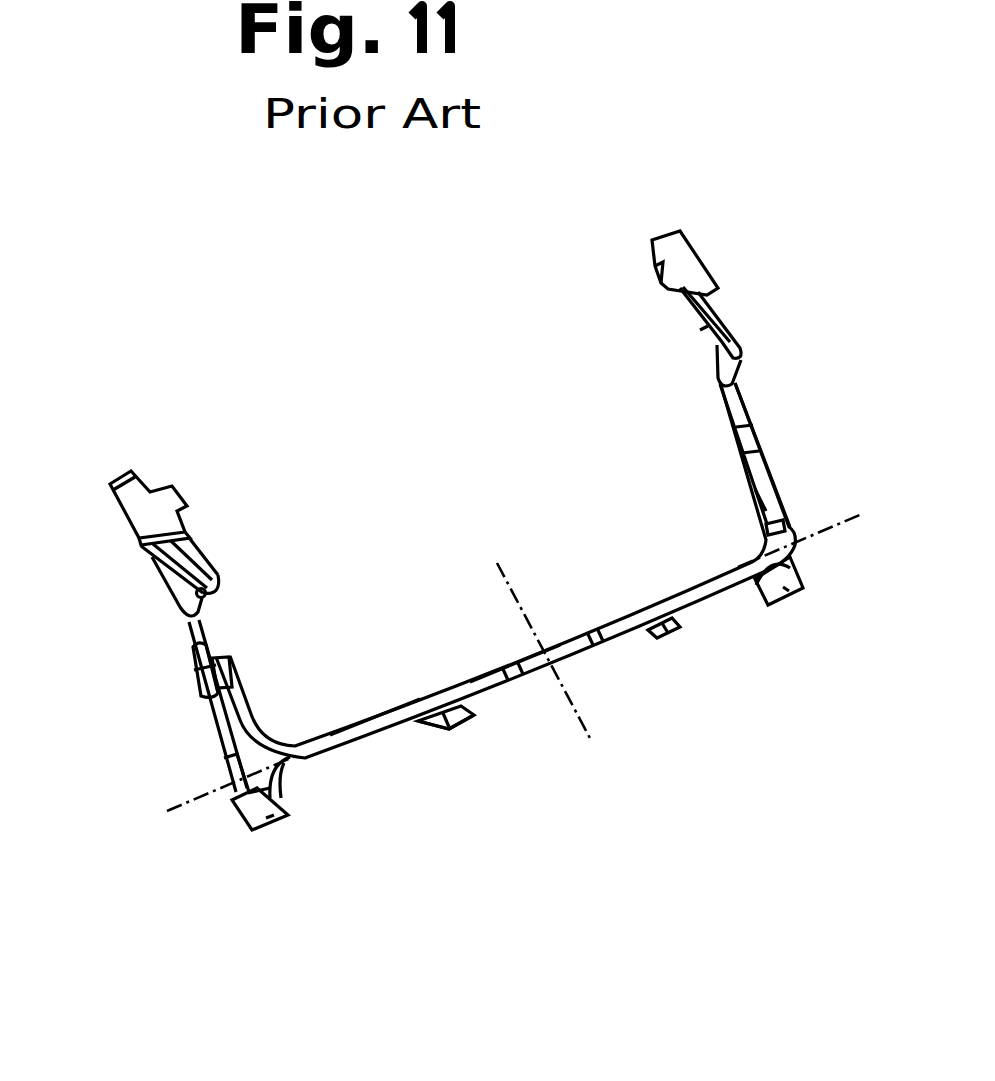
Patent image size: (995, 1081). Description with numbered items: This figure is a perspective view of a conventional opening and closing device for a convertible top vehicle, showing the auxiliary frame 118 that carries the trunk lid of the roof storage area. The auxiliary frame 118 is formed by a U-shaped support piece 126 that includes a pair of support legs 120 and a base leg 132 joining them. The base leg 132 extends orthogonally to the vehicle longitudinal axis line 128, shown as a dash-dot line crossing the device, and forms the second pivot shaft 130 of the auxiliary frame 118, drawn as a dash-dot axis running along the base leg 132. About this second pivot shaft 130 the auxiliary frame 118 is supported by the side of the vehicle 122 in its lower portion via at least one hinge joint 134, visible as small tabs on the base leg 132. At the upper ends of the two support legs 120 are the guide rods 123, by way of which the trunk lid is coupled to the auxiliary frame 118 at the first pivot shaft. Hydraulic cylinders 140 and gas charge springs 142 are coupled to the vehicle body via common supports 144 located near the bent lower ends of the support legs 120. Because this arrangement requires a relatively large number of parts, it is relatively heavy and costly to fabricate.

The auxiliary frame 118 is at (422, 737).
The support legs 120 is at (195, 630).
The vehicle 122 is at (637, 805).
The guide rods 123 is at (215, 547).
The U-shaped support piece 126 is at (385, 710).
The vehicle longitudinal axis line 128 is at (532, 624).
The second pivot shaft 130 is at (180, 815).
The base leg 132 is at (487, 693).
The hinge joint 134 is at (470, 727).
The hydraulic cylinders 140 is at (200, 688).
The gas charge springs 142 is at (280, 768).
The common supports 144 is at (273, 826).